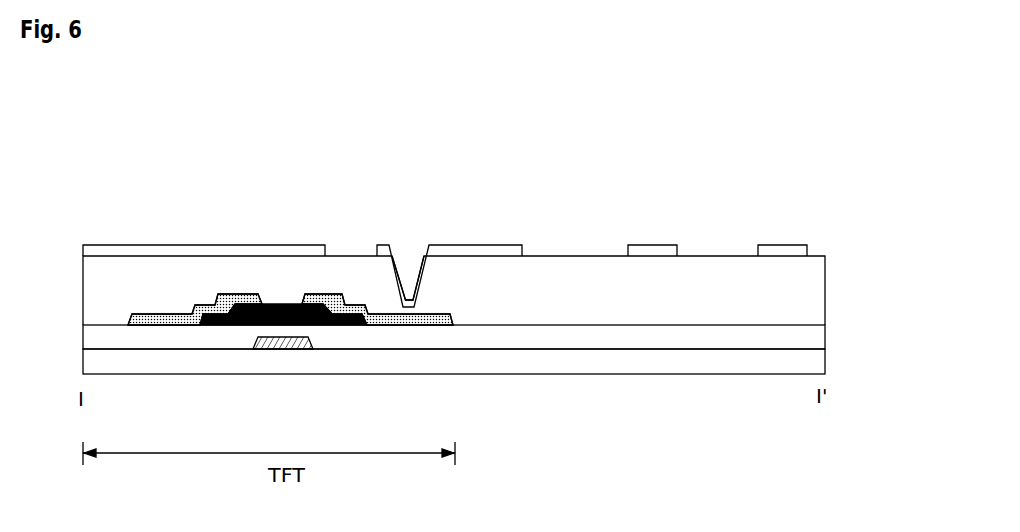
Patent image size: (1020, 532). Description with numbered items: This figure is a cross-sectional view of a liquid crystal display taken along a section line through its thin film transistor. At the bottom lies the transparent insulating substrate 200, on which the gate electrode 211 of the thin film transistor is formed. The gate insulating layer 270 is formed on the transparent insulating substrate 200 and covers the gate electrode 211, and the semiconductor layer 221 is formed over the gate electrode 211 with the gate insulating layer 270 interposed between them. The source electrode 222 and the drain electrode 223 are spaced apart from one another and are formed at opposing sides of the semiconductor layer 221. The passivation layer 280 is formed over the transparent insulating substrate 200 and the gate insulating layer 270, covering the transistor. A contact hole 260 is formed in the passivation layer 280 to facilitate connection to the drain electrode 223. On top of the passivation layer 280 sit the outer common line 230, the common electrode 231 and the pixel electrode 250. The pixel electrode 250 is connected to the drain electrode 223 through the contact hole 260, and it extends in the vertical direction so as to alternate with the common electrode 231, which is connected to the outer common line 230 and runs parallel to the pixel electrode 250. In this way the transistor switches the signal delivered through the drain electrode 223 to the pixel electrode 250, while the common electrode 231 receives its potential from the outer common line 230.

The transparent insulating substrate 200 is at (818, 360).
The gate electrode 211 is at (288, 350).
The semiconductor layer 221 is at (338, 325).
The source electrode 222 is at (182, 325).
The drain electrode 223 is at (382, 325).
The outer common line 230 is at (192, 245).
The common electrode 231 is at (655, 245).
The pixel electrode 250 is at (470, 245).
The contact hole 260 is at (418, 234).
The gate insulating layer 270 is at (822, 335).
The passivation layer 280 is at (822, 284).